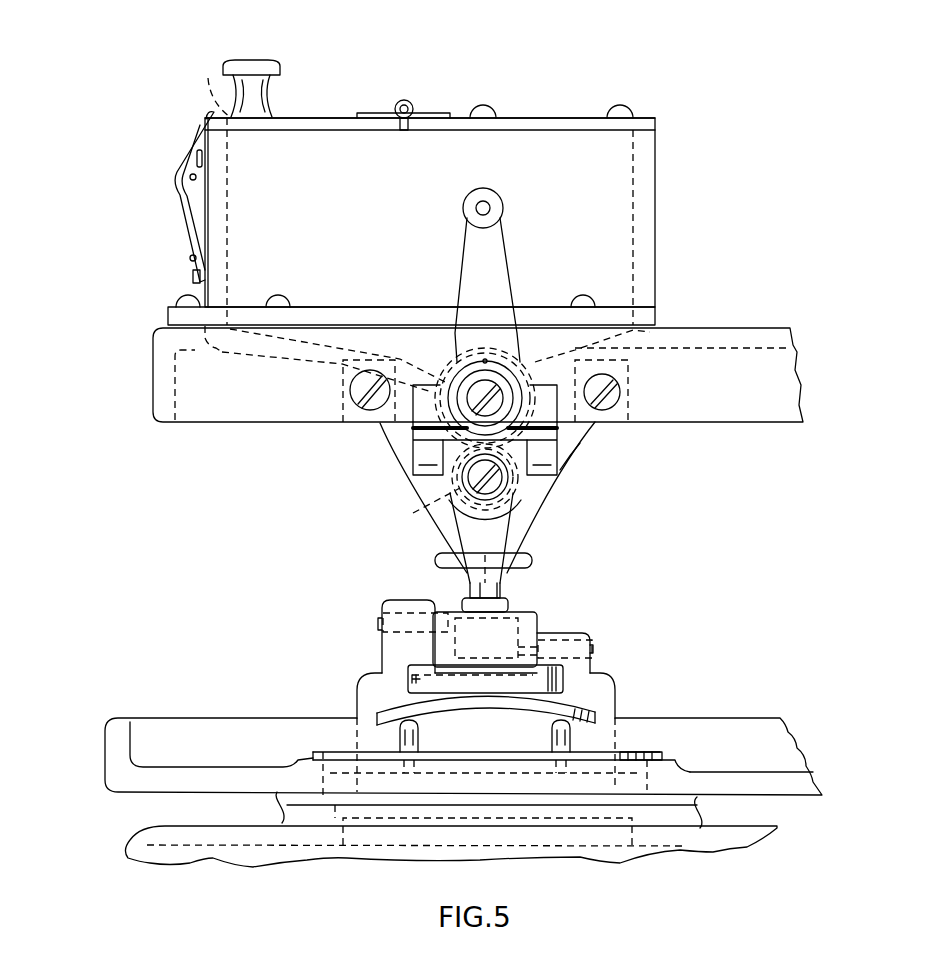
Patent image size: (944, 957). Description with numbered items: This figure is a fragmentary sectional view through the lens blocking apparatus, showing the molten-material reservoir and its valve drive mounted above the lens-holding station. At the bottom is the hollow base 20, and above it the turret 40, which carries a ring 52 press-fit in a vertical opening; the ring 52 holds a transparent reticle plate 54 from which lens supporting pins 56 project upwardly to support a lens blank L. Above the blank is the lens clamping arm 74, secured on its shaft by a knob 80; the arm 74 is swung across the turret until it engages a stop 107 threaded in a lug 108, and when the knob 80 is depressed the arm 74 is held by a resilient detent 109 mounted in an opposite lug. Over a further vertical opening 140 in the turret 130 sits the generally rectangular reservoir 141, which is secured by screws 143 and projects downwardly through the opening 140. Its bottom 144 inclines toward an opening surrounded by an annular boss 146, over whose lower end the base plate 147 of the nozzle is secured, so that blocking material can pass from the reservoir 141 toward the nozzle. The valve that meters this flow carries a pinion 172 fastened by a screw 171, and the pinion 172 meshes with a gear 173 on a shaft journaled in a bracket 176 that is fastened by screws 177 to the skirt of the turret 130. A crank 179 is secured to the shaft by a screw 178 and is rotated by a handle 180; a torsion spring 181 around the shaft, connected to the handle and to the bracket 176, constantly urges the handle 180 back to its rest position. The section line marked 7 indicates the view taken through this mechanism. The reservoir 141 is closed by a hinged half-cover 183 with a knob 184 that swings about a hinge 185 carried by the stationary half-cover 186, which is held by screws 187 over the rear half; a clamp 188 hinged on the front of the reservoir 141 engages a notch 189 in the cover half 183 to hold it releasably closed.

The hollow base 20 is at (127, 853).
The turret 40 is at (105, 738).
The ring 52 is at (648, 752).
The transparent reticle plate 54 is at (478, 778).
The lens supporting pins 56 is at (548, 733).
The lens clamping arm 74 is at (535, 626).
The knob 80 is at (532, 560).
The stop 107 is at (380, 625).
The lug 108 is at (397, 600).
The resilient detent 109 is at (593, 650).
The turret 130 is at (155, 384).
The vertical opening 140 is at (212, 355).
The reservoir 141 is at (653, 203).
The screws 143 is at (182, 298).
The bottom of reservoir 144 is at (283, 358).
The annular boss 146 is at (385, 436).
The base plate 147 is at (417, 442).
The screw 171 is at (495, 483).
The pinion 172 is at (418, 506).
The gear 173 is at (580, 443).
The bracket 176 is at (567, 472).
The screws 177 is at (352, 385).
The screw 178 is at (477, 388).
The crank 179 is at (466, 272).
The handle 180 is at (502, 205).
The torsion spring 181 is at (532, 378).
The hinged half-cover 183 is at (284, 119).
The knob 184 is at (263, 62).
The hinge 185 is at (403, 100).
The stationary half-cover 186 is at (553, 119).
The screws 187 is at (483, 107).
The clamp 188 is at (207, 133).
The notch 189 is at (200, 91).
The section line 7 is at (484, 289).
The lens blank L is at (587, 713).